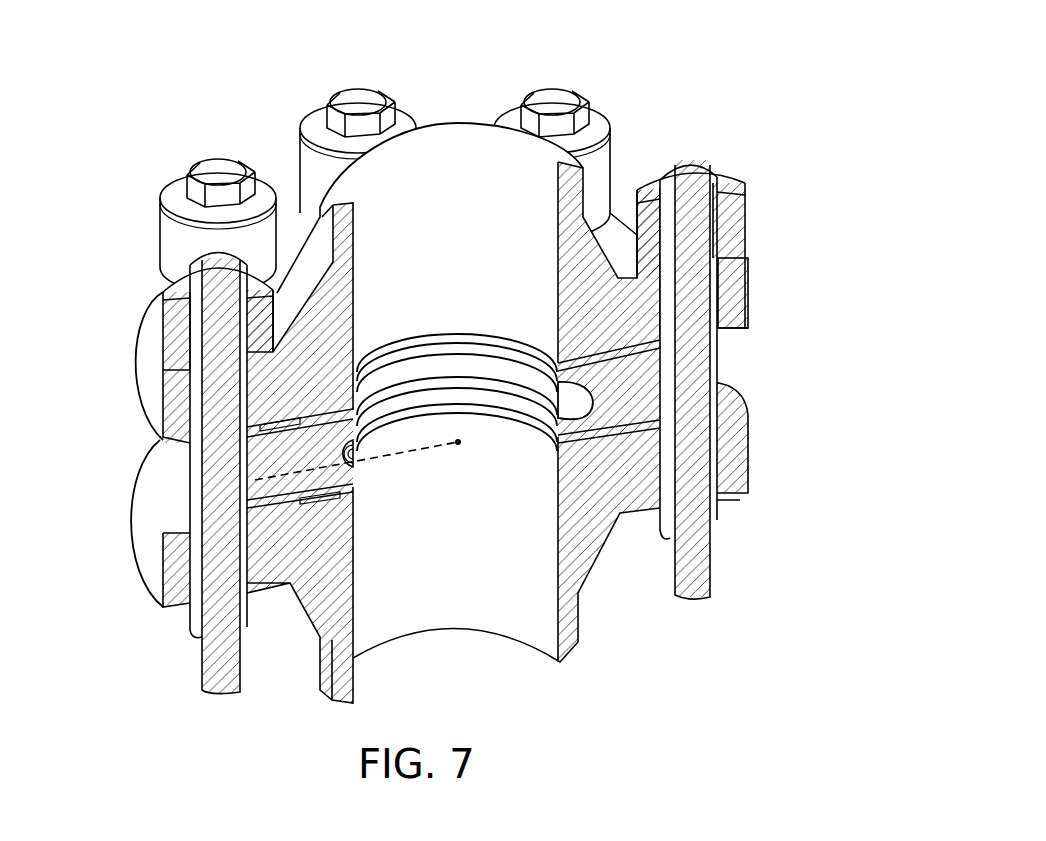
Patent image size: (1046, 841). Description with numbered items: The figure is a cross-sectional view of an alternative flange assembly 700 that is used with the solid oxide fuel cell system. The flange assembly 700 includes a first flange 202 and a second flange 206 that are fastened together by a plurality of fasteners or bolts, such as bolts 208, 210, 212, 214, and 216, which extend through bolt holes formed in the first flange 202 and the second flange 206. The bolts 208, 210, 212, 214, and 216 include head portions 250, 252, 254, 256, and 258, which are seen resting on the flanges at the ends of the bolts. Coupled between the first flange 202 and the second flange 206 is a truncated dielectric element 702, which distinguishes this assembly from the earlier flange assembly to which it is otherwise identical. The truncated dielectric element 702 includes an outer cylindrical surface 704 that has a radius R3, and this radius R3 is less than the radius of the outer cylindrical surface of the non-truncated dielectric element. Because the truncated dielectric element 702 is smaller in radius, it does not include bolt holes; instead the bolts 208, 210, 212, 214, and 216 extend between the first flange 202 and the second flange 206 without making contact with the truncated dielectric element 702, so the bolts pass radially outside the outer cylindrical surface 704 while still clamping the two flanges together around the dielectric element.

The flange assembly 700 is at (784, 42).
The first flange 202 is at (750, 292).
The second flange 206 is at (750, 462).
The bolt 208 is at (205, 262).
The bolt 210 is at (212, 170).
The bolt 212 is at (358, 104).
The bolt 214 is at (547, 100).
The bolt 216 is at (687, 160).
The head portion 250 is at (175, 292).
The head portion 252 is at (190, 188).
The head portion 254 is at (330, 122).
The head portion 256 is at (527, 122).
The head portion 258 is at (650, 180).
The truncated dielectric element 702 is at (648, 386).
The outer cylindrical surface 704 is at (292, 478).
The radius R3 is at (456, 444).